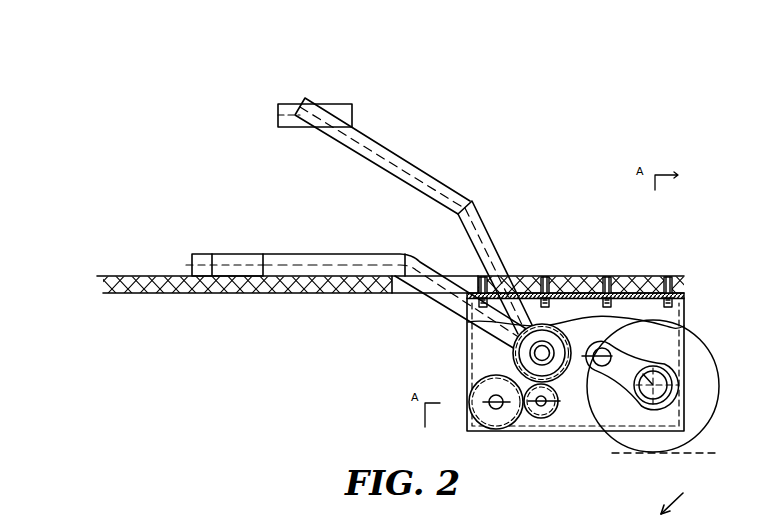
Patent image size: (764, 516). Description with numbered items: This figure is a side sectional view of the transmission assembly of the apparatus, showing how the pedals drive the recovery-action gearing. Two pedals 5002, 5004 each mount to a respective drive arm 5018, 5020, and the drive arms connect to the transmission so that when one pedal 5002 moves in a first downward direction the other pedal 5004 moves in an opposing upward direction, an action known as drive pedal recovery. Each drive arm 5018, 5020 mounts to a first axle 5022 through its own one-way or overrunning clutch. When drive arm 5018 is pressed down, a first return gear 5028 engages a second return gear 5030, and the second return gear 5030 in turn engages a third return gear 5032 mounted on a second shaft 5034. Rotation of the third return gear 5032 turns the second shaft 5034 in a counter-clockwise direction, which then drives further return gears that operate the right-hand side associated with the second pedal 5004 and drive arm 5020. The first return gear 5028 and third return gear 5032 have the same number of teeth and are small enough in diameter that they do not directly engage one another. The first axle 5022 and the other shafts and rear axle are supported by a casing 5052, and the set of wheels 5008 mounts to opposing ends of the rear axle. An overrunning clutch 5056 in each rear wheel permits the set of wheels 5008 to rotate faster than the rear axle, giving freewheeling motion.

The pedal 5002 is at (357, 118).
The pedal 5004 is at (234, 263).
The set of wheels 5008 is at (697, 435).
The drive arm 5018 is at (475, 210).
The drive arm 5020 is at (348, 263).
The first axle 5022 is at (544, 351).
The first return gear 5028 is at (600, 342).
The second return gear 5030 is at (547, 413).
The third return gear 5032 is at (478, 394).
The second shaft 5034 is at (675, 386).
The casing 5052 is at (686, 313).
The overrunning clutch 5056 is at (694, 500).